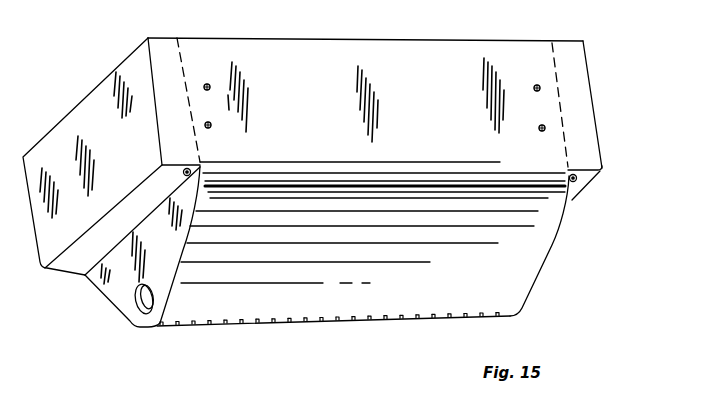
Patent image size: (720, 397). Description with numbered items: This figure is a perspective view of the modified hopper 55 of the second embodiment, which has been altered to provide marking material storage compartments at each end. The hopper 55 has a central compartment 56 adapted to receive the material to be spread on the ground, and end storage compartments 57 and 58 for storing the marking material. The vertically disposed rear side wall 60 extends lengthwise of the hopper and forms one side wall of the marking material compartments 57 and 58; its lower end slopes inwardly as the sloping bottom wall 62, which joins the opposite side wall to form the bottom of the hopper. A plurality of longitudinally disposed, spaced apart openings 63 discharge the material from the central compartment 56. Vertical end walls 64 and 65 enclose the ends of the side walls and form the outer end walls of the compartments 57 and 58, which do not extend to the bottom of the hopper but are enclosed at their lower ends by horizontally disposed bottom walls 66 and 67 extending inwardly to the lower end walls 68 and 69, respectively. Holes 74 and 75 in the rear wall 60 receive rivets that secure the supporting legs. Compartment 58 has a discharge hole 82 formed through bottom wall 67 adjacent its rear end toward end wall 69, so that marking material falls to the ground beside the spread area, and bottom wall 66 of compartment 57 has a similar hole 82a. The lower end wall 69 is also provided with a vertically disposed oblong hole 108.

The hopper 55 is at (290, 37).
The central compartment 56 is at (433, 62).
The end storage compartment 57 is at (573, 97).
The end storage compartment 58 is at (165, 58).
The side wall 60 is at (342, 55).
The sloping lower end of side wall 62 is at (393, 303).
The openings 63 is at (305, 323).
The vertical end wall 64 is at (597, 128).
The vertical end wall 65 is at (88, 110).
The bottom wall 66 is at (580, 186).
The bottom wall 67 is at (72, 263).
The lower end wall 68 is at (545, 255).
The lower end wall 69 is at (118, 297).
The hole 74 is at (207, 84).
The hole 75 is at (545, 66).
The discharge hole 82 is at (183, 175).
The discharge hole 82a is at (575, 181).
The oblong hole 108 is at (148, 293).